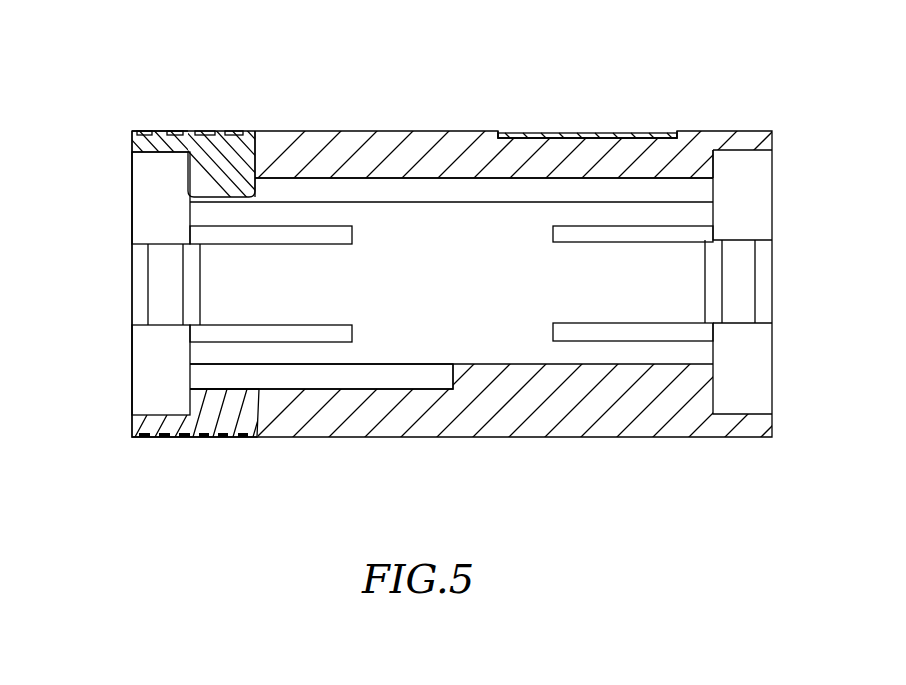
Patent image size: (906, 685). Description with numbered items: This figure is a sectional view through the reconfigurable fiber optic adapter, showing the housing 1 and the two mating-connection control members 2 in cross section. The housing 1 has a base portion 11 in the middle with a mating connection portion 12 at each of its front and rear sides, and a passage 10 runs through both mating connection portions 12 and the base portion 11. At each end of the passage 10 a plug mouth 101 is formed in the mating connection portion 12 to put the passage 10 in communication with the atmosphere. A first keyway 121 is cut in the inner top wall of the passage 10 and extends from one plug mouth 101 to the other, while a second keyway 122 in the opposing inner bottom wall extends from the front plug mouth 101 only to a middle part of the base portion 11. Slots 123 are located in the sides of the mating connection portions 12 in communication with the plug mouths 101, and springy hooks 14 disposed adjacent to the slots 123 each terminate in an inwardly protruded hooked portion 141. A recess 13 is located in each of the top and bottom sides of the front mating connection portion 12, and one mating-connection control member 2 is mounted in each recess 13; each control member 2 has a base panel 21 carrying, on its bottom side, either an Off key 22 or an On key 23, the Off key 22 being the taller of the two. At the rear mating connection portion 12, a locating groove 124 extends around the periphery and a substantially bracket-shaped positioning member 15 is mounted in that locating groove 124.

The housing 1 is at (391, 120).
The mating-connection control member 2 is at (68, 142).
The passage 10 is at (283, 259).
The base portion 11 is at (444, 140).
The mating connection portion 12 is at (277, 82).
The first keyway 121 is at (305, 180).
The second keyway 122 is at (268, 388).
The slot 123 is at (219, 337).
The locating groove 124 is at (519, 137).
The recess 13 is at (242, 152).
The springy hook 14 is at (250, 260).
The hooked portion 141 is at (158, 272).
The positioning member 15 is at (569, 136).
The base panel 21 is at (136, 147).
The Off key 22 is at (205, 184).
The On key 23 is at (217, 405).
The plug mouth 101 is at (140, 407).